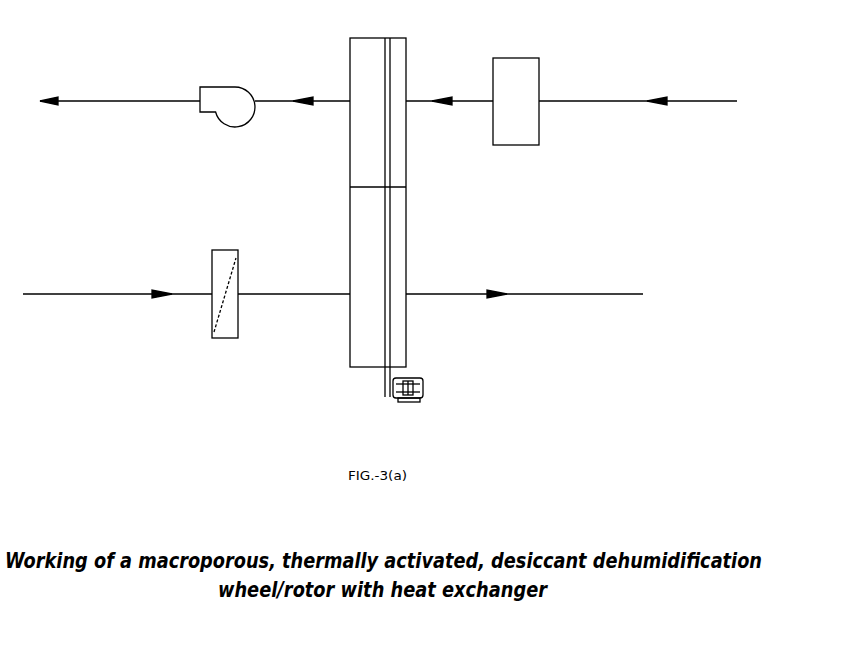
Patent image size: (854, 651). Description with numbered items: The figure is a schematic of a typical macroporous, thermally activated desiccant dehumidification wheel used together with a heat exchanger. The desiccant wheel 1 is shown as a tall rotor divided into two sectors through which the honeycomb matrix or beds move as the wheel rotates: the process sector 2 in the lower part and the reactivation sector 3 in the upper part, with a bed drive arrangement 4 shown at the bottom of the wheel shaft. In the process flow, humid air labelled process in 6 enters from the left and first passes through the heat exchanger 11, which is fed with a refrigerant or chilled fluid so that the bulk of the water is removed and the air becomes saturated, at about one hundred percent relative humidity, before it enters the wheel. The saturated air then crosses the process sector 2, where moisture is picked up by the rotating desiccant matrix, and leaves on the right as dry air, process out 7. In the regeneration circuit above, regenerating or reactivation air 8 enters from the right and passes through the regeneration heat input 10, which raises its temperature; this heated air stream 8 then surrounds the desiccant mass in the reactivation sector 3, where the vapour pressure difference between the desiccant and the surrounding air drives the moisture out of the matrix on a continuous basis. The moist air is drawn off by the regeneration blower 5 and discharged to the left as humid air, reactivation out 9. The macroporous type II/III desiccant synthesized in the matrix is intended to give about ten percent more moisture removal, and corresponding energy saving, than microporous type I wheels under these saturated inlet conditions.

The desiccant wheel 1 is at (360, 368).
The process sector 2 is at (355, 325).
The reactivation sector 3 is at (360, 120).
The bed drive arrangement 4 is at (414, 403).
The regeneration blower 5 is at (224, 124).
The humid air process inlet 6 is at (185, 297).
The dry air process outlet 7 is at (474, 297).
The air stream 8 is at (569, 104).
The humid air reactivation outlet 9 is at (76, 99).
The regeneration heat input 10 is at (508, 144).
The heat exchanger 11 is at (228, 336).